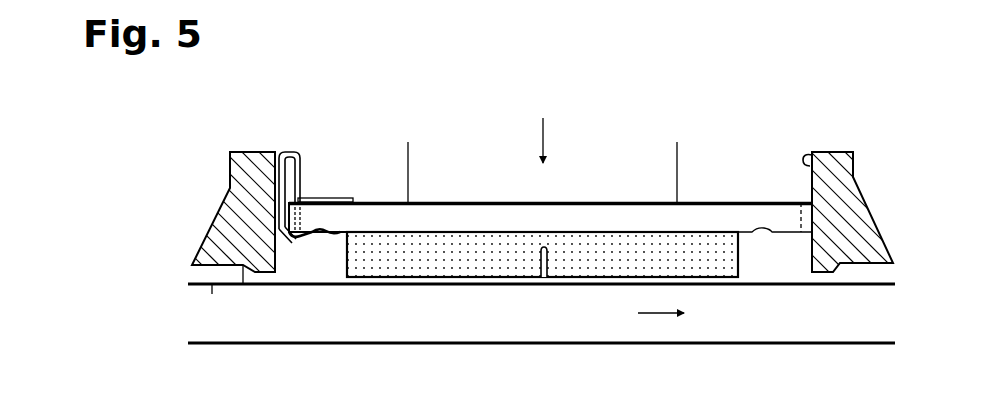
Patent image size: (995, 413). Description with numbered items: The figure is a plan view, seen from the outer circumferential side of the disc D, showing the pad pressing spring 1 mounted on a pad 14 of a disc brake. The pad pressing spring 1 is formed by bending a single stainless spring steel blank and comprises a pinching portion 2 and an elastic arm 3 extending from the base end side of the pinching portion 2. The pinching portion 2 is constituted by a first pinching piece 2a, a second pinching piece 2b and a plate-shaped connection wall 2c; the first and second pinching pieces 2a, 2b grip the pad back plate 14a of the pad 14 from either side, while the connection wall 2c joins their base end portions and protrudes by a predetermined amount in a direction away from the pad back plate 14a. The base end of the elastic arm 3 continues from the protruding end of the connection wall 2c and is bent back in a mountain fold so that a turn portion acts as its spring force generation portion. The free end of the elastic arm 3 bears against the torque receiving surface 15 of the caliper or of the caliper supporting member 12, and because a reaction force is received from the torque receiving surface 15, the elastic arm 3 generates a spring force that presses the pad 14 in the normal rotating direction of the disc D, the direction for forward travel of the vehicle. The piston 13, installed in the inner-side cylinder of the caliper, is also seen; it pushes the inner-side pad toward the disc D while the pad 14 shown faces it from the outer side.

The pad pressing spring 1 is at (271, 178).
The pinching portion 2 is at (322, 192).
The first pinching piece 2a is at (341, 199).
The second pinching piece 2b is at (313, 235).
The connection wall 2c is at (341, 234).
The elastic arm 3 is at (243, 267).
The disc D is at (212, 293).
The caliper supporting member 12 is at (860, 220).
The piston 13 is at (472, 168).
The pad 14 is at (687, 228).
The pad back plate 14a is at (632, 213).
The torque receiving surface 15 is at (282, 152).